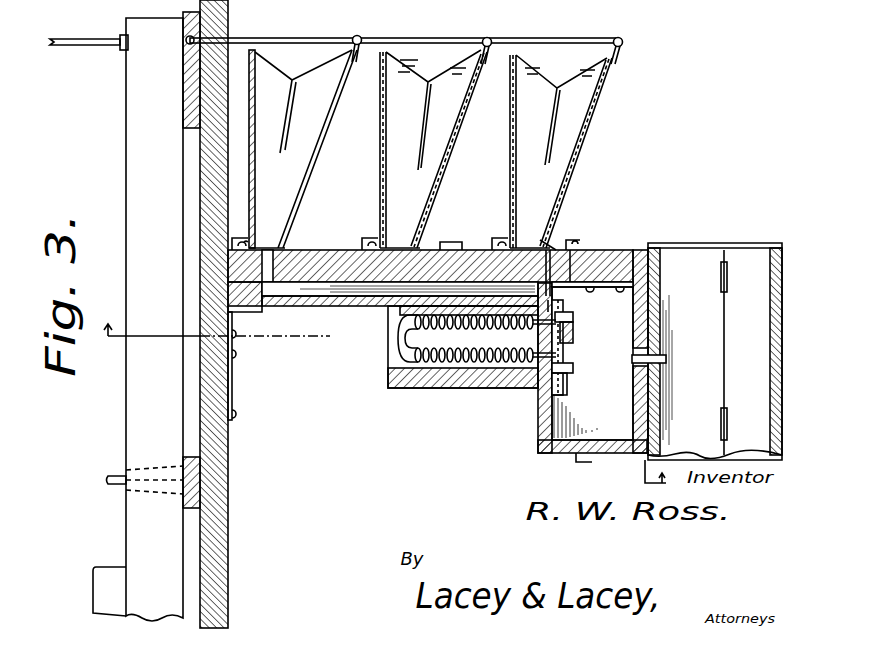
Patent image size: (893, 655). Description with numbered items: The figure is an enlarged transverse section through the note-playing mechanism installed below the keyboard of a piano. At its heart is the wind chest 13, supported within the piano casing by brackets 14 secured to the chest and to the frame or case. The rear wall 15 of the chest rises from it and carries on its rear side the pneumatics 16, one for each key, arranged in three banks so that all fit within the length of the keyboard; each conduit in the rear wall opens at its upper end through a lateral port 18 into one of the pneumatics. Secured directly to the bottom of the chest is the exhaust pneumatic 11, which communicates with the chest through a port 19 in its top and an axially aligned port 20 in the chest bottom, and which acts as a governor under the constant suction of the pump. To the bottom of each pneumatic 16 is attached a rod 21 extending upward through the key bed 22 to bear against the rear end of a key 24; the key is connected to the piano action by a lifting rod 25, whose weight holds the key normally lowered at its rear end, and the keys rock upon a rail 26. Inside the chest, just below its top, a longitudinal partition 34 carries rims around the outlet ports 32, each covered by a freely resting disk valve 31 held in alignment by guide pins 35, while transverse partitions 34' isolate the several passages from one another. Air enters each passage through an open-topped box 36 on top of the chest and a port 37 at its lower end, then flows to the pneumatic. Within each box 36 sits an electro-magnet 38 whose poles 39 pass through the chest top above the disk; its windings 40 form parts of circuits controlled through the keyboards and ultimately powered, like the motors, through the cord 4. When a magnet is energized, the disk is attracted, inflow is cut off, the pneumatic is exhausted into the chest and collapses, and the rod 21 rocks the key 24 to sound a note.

The cord 4 is at (380, 410).
The exhaust pneumatic 11 is at (343, 300).
The wind chest 13 is at (538, 444).
The brackets 14 is at (233, 380).
The rear wall 15 is at (330, 250).
The pneumatic 16 is at (382, 144).
The lateral port 18 is at (268, 278).
The port 19 is at (665, 362).
The port 20 is at (638, 362).
The rod 21 is at (337, 39).
The key bed 22 is at (220, 528).
The key 24 is at (95, 570).
The lifting rod 25 is at (79, 40).
The rail 26 is at (184, 462).
The disk valve 31 is at (594, 352).
The outlet port 32 is at (575, 336).
The partition 34 is at (582, 203).
The transverse partitions 34' is at (542, 213).
The guide pins 35 is at (573, 250).
The box 36 is at (427, 388).
The port 37 is at (539, 0).
The electro-magnet 38 is at (413, 334).
The poles 39 is at (546, 250).
The windings 40 is at (453, 250).